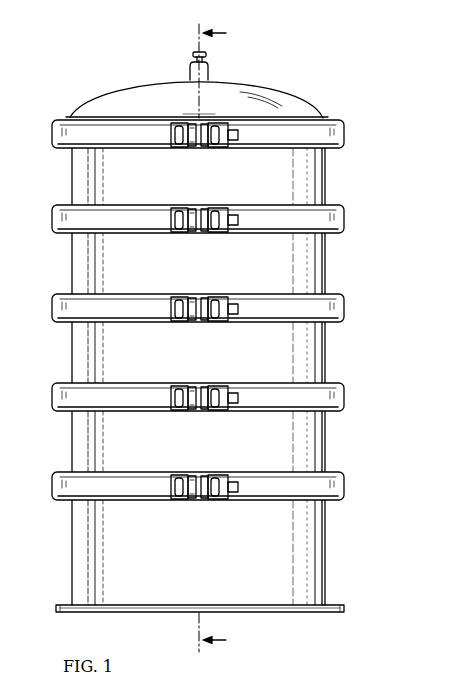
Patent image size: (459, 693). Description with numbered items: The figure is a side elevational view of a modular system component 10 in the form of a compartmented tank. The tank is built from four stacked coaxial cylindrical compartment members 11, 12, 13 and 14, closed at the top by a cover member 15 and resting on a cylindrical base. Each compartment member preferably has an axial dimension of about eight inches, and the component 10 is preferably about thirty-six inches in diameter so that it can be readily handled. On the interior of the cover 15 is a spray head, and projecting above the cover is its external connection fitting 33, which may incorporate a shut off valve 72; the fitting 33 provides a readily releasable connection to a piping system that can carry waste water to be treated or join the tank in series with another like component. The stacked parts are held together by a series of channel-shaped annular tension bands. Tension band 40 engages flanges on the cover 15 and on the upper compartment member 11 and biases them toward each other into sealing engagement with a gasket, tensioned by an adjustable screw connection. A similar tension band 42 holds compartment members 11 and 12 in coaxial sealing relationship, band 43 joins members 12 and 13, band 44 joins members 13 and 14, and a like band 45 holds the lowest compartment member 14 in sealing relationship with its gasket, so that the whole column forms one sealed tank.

The modular system component 10 is at (358, 350).
The compartment member 11 is at (78, 177).
The compartment member 12 is at (78, 266).
The compartment member 13 is at (78, 352).
The compartment member 14 is at (78, 443).
The cover member 15 is at (268, 100).
The external connection fitting 33 is at (207, 72).
The shut off valve 72 is at (193, 55).
The annular tension band 40 is at (345, 134).
The tension band 42 is at (326, 217).
The tension band 43 is at (345, 311).
The annular tension band 44 is at (345, 397).
The annular tension band 45 is at (345, 481).